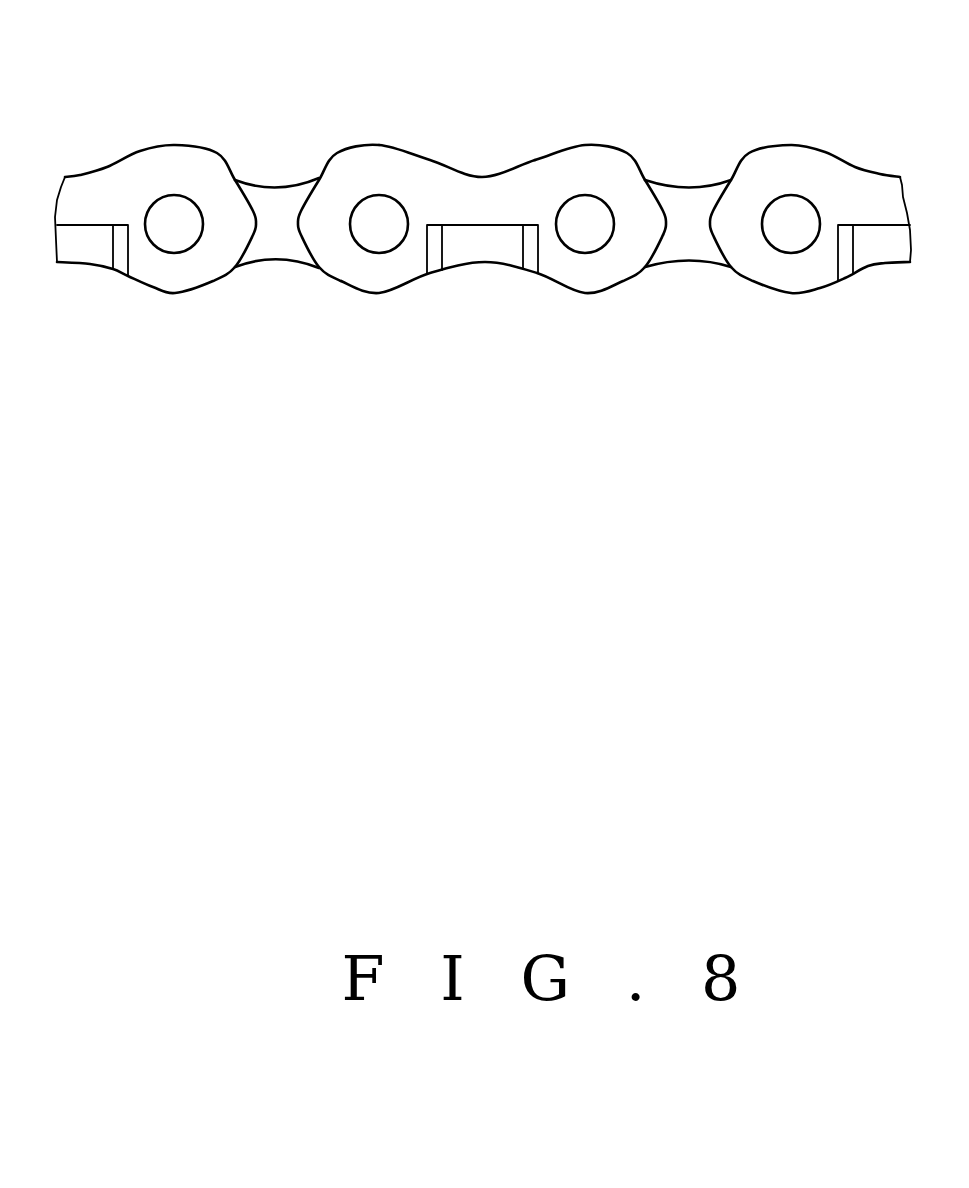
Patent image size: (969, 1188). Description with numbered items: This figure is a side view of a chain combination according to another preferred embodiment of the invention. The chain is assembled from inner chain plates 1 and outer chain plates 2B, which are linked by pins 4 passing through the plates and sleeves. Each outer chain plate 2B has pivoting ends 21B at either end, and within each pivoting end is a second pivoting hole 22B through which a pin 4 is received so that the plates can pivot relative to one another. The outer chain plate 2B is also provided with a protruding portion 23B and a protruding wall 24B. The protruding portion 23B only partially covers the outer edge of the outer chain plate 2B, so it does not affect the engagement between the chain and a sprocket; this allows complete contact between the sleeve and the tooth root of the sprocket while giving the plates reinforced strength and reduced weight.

The inner chain plate 1 is at (282, 200).
The outer chain plate 2B is at (482, 212).
The pin 4 is at (387, 218).
The pivoting end 21B is at (382, 272).
The second pivoting hole 22B is at (358, 248).
The protruding portion 23B is at (586, 148).
The protruding wall 24B is at (487, 250).